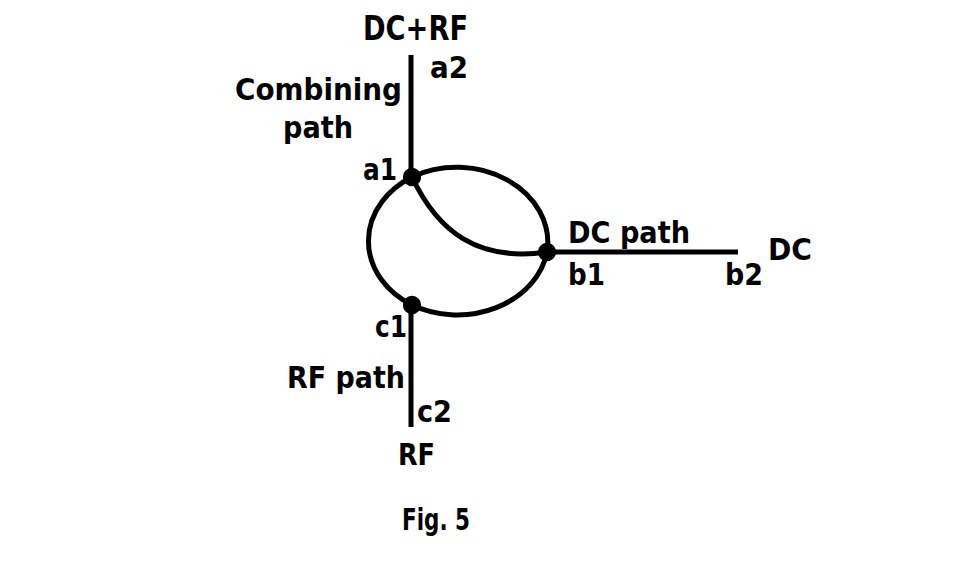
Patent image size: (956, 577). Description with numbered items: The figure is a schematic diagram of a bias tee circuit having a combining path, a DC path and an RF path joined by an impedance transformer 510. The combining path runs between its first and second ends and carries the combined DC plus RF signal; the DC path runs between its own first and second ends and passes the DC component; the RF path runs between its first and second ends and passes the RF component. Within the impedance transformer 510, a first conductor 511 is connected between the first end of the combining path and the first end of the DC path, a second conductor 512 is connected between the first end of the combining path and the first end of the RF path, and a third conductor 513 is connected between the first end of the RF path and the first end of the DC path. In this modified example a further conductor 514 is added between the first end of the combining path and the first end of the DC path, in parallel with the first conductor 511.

The impedance transformer 510 is at (332, 238).
The first conductor 511 is at (465, 168).
The second conductor 512 is at (376, 271).
The third conductor 513 is at (497, 310).
The fourth conductor 514 is at (515, 250).